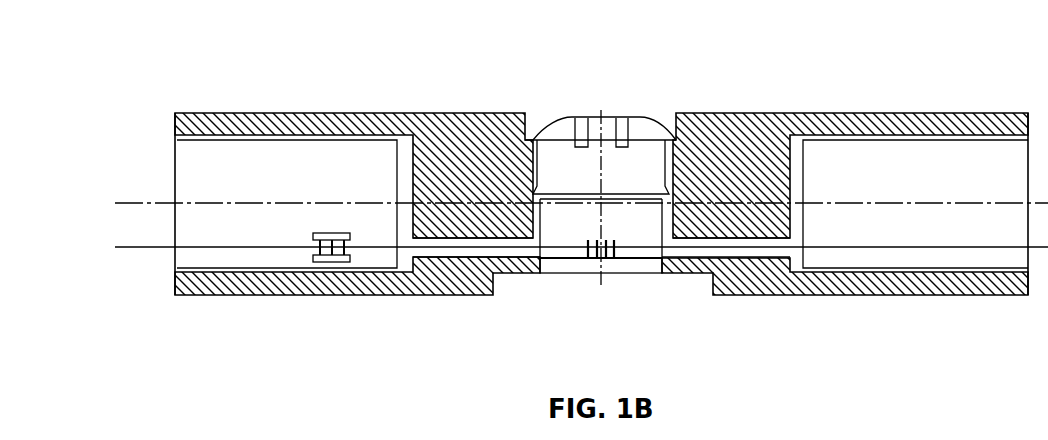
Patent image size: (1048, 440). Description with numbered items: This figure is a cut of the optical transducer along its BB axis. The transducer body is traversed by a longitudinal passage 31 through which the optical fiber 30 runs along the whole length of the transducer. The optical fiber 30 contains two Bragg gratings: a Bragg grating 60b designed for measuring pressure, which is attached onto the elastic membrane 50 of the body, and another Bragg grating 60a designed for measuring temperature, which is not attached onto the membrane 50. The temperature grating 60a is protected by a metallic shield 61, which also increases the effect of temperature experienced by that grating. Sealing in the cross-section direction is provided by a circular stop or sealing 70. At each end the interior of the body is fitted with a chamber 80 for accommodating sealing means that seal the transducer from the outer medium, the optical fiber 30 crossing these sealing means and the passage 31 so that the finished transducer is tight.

The optical fiber 30 is at (843, 252).
The longitudinal passage 31 is at (752, 262).
The elastic membrane 50 is at (573, 262).
The Bragg grating 60a is at (350, 262).
The Bragg grating 60b is at (617, 262).
The metallic shield 61 is at (328, 262).
The circular stop or sealing 70 is at (642, 137).
The chamber 80 is at (275, 168).